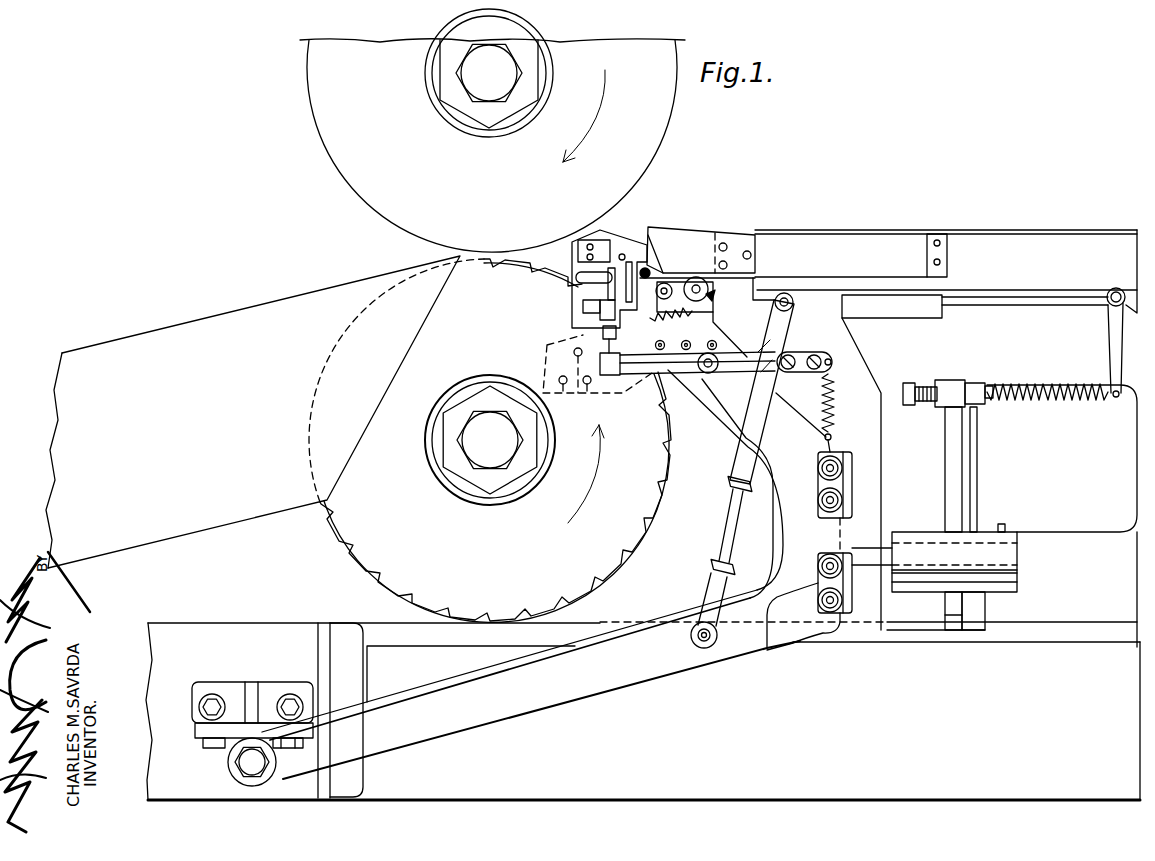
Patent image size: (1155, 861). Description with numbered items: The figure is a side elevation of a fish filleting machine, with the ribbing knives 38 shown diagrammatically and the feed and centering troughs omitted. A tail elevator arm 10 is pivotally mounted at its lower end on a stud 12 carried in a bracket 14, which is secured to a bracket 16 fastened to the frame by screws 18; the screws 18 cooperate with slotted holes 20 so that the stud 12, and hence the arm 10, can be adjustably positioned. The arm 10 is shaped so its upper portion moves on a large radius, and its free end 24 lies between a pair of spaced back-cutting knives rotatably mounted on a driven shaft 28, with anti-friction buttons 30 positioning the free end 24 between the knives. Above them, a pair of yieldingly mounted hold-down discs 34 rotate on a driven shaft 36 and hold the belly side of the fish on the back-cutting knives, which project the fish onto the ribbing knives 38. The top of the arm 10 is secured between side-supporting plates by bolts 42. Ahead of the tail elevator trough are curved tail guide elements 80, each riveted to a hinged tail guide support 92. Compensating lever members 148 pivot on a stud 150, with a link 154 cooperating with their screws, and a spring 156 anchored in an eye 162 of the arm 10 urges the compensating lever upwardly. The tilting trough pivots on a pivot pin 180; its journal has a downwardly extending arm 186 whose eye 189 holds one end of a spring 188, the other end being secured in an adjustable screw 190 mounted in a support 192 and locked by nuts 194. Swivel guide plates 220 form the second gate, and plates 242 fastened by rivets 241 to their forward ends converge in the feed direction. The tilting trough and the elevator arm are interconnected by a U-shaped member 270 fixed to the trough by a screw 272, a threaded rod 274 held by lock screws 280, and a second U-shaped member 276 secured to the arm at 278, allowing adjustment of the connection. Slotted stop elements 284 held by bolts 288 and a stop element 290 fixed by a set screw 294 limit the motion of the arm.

The tail elevator arm 10 is at (674, 669).
The stud 12 is at (240, 770).
The bracket 14 is at (200, 735).
The bracket 16 is at (240, 693).
The screws 18 is at (212, 694).
The slotted holes 20 is at (290, 694).
The free end 24 is at (549, 347).
The shaft 28 is at (480, 452).
The buttons 30 is at (580, 390).
The hold-down discs 34 is at (335, 158).
The shaft 36 is at (480, 100).
The ribbing knives 38 is at (152, 340).
The bolts 42 is at (710, 341).
The tail guide elements 80 is at (580, 252).
The tail guide support 92 is at (600, 247).
The compensating lever member 148 is at (760, 357).
The stud 150 is at (710, 373).
The link 154 is at (800, 356).
The spring 156 is at (836, 408).
The eye 162 is at (832, 437).
The pivot pin 180 is at (1112, 291).
The arm 186 is at (1112, 340).
The spring 188 is at (1040, 400).
The eye 189 is at (1114, 398).
The adjustable screw 190 is at (978, 382).
The support 192 is at (947, 446).
The nuts 194 is at (936, 383).
The swivel guide plates 220 is at (845, 240).
The rivets 241 is at (748, 250).
The plate 242 is at (688, 240).
The U-shaped member 270 is at (745, 460).
The screw 272 is at (776, 306).
The rod 274 is at (726, 508).
The second U-shaped member 276 is at (705, 592).
The securing point 278 is at (704, 650).
The lock screws 280 is at (732, 486).
The stop element 284 is at (847, 618).
The bolts 288 is at (818, 478).
The stop element 290 is at (890, 540).
The set screw 294 is at (1004, 526).